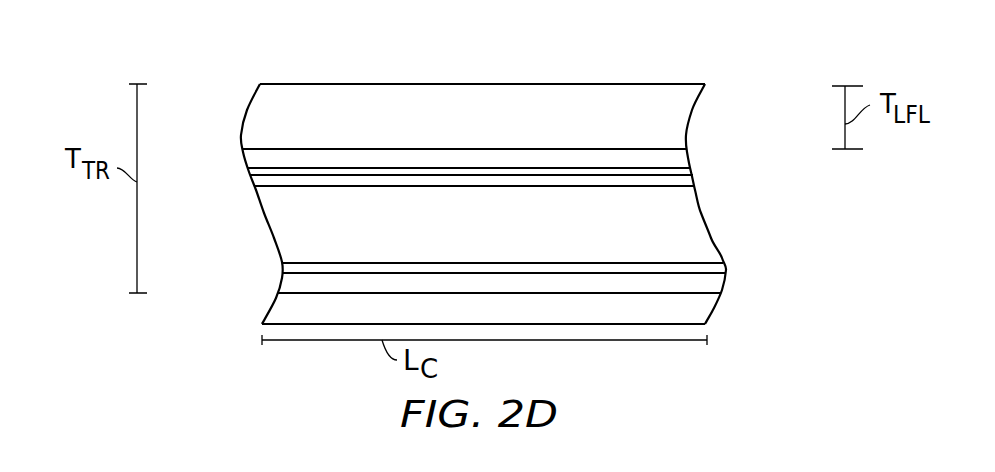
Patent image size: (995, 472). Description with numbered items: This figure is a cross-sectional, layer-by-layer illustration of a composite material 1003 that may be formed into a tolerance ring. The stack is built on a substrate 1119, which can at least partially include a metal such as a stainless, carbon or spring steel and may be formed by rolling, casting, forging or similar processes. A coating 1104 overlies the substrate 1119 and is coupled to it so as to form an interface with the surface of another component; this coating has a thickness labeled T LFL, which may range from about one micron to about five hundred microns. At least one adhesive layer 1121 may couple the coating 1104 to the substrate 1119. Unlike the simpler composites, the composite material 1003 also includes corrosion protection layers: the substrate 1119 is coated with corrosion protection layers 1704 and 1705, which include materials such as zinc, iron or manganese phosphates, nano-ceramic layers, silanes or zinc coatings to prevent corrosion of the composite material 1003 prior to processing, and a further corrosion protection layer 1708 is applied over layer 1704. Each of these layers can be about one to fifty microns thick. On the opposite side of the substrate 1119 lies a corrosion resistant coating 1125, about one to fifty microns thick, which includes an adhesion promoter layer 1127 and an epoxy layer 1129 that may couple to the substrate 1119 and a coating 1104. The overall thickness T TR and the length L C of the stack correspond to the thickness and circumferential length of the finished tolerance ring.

The composite material 1003 is at (812, 37).
The coating 1104 is at (243, 118).
The adhesive layer 1121 is at (243, 150).
The corrosion protection layer 1708 is at (690, 168).
The corrosion protection layer 1704 is at (693, 180).
The substrate 1119 is at (263, 213).
The corrosion protection layer 1705 is at (726, 265).
The adhesion promoter layer 1127 is at (279, 275).
The epoxy layer 1129 is at (270, 308).
The corrosion resistant coating 1125 is at (735, 273).